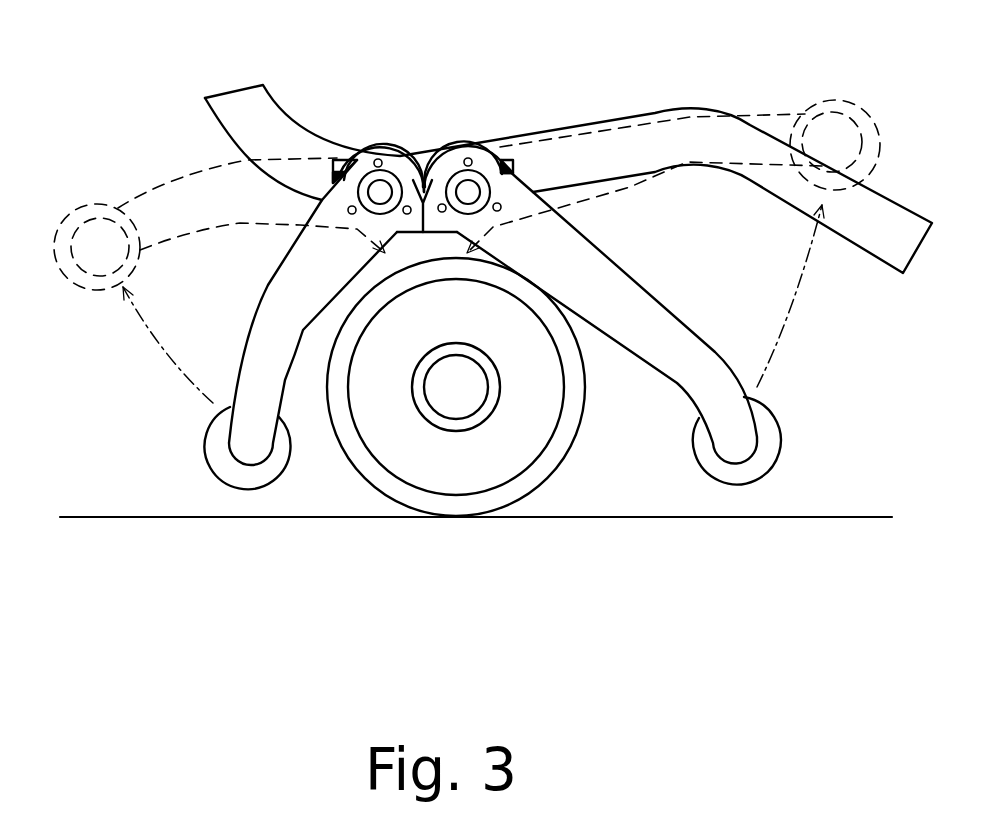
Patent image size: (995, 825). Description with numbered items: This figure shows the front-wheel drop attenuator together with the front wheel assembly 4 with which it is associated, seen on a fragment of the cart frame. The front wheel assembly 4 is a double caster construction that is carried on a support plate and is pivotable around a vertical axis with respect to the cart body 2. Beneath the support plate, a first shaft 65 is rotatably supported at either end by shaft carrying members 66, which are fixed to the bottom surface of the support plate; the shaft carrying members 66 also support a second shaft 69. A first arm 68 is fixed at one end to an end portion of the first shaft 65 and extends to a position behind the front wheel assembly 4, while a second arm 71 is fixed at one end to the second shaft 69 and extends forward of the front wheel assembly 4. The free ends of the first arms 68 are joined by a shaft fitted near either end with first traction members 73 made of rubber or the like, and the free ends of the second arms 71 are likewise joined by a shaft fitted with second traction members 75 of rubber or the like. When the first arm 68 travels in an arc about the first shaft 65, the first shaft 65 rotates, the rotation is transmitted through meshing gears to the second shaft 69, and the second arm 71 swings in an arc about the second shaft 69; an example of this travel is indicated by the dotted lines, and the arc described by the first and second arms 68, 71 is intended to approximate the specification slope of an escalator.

The cart body 2 is at (294, 110).
The front wheel assembly 4 is at (355, 472).
The first shaft 65 is at (381, 190).
The shaft carrying member 66 is at (518, 169).
The first arm 68 is at (263, 313).
The second shaft 69 is at (470, 190).
The second arm 71 is at (627, 298).
The first traction member 73 is at (222, 448).
The second traction member 75 is at (762, 437).